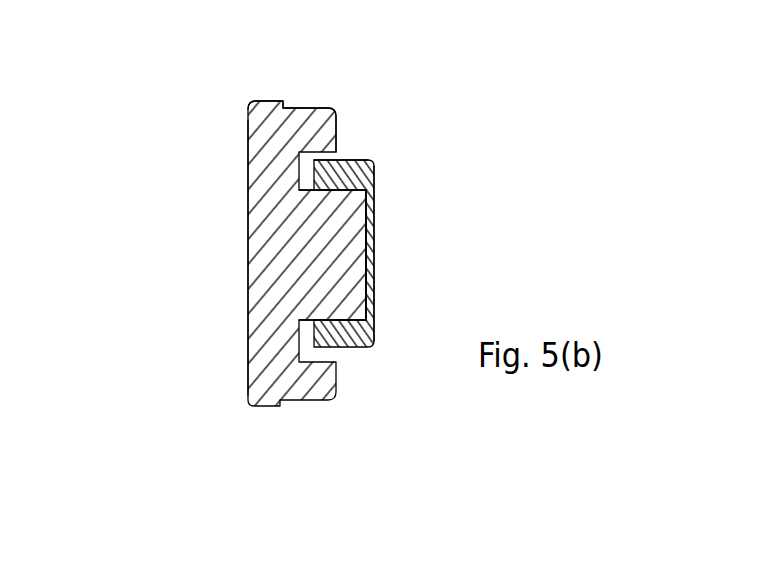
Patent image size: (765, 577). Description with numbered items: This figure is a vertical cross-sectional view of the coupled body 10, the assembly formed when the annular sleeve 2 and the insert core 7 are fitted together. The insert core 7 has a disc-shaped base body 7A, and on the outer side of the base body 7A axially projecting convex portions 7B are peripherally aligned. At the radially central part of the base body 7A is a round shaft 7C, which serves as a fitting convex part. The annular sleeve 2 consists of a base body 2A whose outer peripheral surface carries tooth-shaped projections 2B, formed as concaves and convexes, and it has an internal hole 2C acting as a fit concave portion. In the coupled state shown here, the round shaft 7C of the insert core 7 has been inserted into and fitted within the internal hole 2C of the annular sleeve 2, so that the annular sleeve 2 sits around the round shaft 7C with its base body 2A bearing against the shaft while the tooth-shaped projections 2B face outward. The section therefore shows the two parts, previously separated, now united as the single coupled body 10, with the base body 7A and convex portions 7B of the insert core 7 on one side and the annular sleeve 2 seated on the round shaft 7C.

The coupled body 10 is at (153, 87).
The insert core 7 is at (247, 123).
The base body 7A is at (248, 222).
The convex portions 7B is at (338, 125).
The round shaft 7C is at (374, 252).
The annular sleeve 2 is at (304, 158).
The base body 2A is at (375, 178).
The tooth-shaped projections 2B is at (353, 159).
The internal hole 2C is at (367, 195).